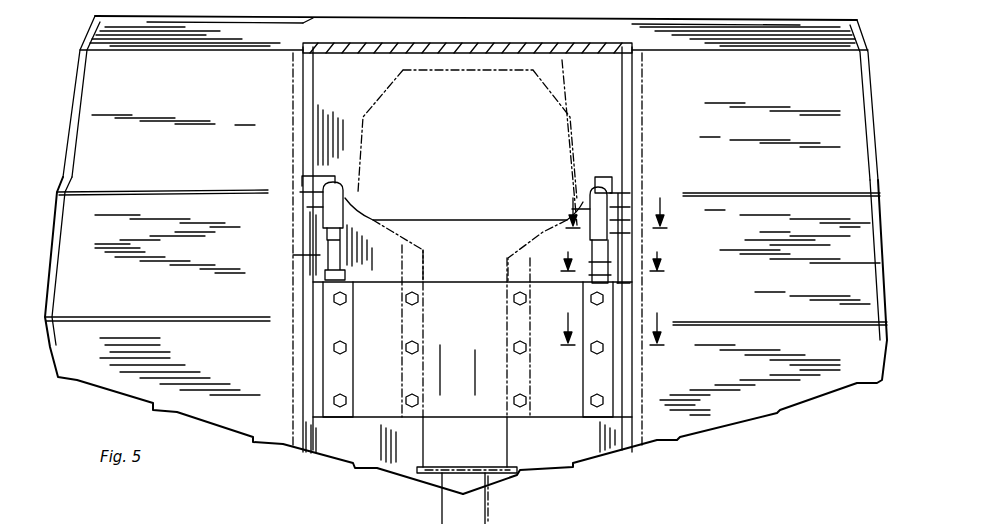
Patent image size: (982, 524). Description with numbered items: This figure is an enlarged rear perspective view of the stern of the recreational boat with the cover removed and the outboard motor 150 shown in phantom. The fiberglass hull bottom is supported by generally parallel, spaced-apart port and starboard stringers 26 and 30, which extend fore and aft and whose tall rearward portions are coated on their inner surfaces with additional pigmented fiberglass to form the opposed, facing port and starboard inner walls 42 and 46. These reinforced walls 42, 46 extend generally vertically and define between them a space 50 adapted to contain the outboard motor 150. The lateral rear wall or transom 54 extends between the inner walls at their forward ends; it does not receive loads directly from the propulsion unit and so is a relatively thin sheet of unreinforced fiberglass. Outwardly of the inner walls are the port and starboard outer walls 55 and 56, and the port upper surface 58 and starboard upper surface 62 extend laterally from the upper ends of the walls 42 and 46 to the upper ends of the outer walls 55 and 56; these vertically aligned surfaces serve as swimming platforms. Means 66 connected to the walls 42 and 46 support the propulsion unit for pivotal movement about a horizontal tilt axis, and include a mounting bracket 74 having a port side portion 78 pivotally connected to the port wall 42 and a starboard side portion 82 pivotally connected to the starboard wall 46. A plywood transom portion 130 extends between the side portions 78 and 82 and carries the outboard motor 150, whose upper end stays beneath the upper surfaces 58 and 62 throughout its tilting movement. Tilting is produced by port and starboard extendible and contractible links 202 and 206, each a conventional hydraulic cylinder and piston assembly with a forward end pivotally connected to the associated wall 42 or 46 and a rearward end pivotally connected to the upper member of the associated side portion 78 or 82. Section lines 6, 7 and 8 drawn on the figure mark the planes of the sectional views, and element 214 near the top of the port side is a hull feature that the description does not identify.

The section line 6- 6 is at (609, 144).
The section line 7- 7 is at (612, 253).
The section line 8- 8 is at (611, 319).
The port stringer 26 is at (284, 376).
The starboard stringer 30 is at (653, 397).
The port inner wall 42 is at (303, 97).
The starboard inner wall 46 is at (632, 78).
The space 50 is at (327, 447).
The lateral rear wall (transom) 54 is at (318, 117).
The port outer wall 55 is at (78, 72).
The starboard outer wall 56 is at (870, 77).
The port upper surface 58 is at (187, 37).
The starboard upper surface 62 is at (740, 40).
The means for supporting a propulsion unit 66 is at (584, 430).
The mounting bracket 74 is at (375, 428).
The port side portion 78 is at (318, 256).
The starboard side portion 82 is at (617, 290).
The transom portion 130 is at (563, 412).
The outboard motor 150 is at (437, 510).
The port extendible and contractible link 202 is at (345, 198).
The starboard extendible and contractible link 206 is at (610, 190).
The top frame member 214 is at (303, 38).